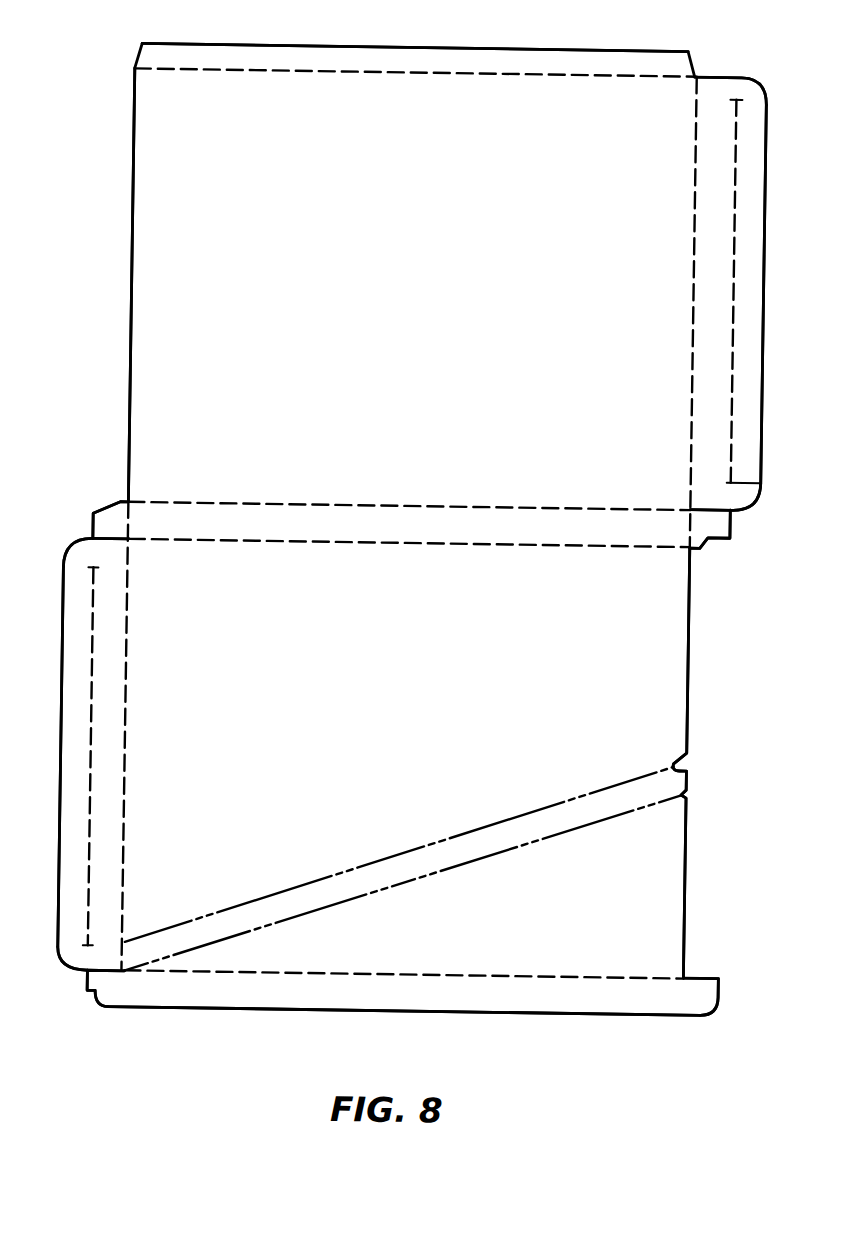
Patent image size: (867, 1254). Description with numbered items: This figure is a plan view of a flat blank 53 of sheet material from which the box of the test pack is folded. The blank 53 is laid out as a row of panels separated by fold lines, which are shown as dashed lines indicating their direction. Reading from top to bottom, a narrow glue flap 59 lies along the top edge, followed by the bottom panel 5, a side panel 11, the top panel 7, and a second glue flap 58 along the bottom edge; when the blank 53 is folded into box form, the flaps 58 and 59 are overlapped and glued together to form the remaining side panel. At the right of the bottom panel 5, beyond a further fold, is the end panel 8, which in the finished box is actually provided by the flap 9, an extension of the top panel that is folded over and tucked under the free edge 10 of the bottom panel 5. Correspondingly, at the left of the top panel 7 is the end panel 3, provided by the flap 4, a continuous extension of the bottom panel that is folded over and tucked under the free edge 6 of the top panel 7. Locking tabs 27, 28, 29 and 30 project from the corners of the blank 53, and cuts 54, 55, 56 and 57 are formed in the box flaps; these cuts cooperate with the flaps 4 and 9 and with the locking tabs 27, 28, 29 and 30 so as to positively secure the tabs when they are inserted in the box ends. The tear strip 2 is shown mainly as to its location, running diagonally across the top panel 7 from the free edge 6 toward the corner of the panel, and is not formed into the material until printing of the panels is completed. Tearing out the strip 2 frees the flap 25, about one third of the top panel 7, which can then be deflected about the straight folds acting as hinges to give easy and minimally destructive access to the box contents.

The tear strip 2 is at (418, 856).
The end panel 3 is at (100, 766).
The flap 4 is at (63, 727).
The bottom panel 5 is at (447, 206).
The free edge 6 is at (125, 164).
The top panel 7 is at (416, 689).
The end panel 8 is at (717, 216).
The flap 9 is at (762, 187).
The free edge 10 is at (693, 714).
The panel 11 is at (474, 532).
The flap 25 is at (617, 914).
The locking tab 27 is at (117, 508).
The locking tab 28 is at (705, 539).
The locking tab 29 is at (716, 999).
The locking tab 30 is at (115, 1011).
The blank 53 is at (158, 392).
The cut 54 is at (93, 543).
The cut 55 is at (90, 972).
The cut 56 is at (746, 497).
The cut 57 is at (730, 76).
The flap 58 is at (497, 1010).
The flap 59 is at (541, 58).